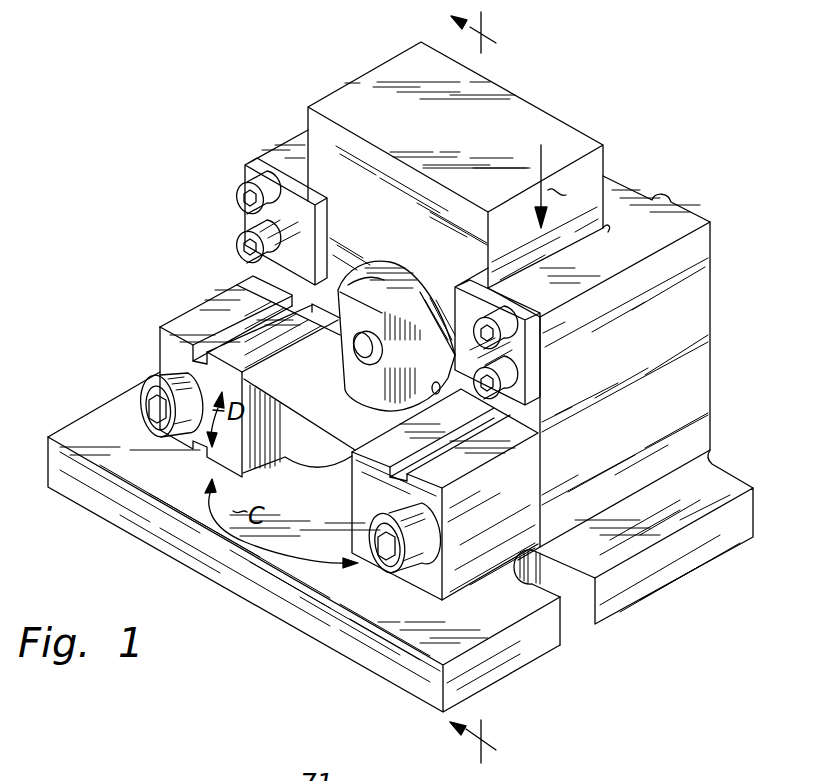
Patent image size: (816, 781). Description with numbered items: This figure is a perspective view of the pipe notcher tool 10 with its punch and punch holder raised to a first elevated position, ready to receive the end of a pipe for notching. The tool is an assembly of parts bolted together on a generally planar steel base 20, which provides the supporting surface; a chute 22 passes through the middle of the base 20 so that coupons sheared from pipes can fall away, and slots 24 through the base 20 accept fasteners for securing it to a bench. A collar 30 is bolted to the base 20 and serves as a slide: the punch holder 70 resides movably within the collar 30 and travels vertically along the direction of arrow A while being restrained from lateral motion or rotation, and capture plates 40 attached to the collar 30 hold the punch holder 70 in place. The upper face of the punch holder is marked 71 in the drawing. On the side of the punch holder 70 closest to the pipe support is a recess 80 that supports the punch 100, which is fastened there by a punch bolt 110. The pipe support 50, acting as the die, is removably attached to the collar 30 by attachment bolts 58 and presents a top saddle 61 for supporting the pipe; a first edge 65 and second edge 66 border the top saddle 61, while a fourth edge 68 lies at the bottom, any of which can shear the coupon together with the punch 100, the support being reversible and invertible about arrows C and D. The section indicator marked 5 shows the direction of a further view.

The pipe notcher tool 10 is at (140, 197).
The base 20 is at (678, 558).
The chute 22 is at (340, 480).
The slots 24 is at (581, 607).
The collar 30 is at (700, 327).
The capture plates 40 is at (256, 221).
The pipe support 50 is at (503, 544).
The attachment bolts 58 is at (150, 385).
The top saddle 61 is at (324, 369).
The first edge 65 is at (345, 390).
The second edge 66 is at (313, 410).
The fourth edge 68 is at (298, 458).
The punch holder 70 is at (368, 64).
The top surface 71 is at (447, 136).
The recess 80 is at (365, 332).
The punch 100 is at (425, 367).
The punch bolt 110 is at (395, 265).
The section line 5 is at (480, 394).